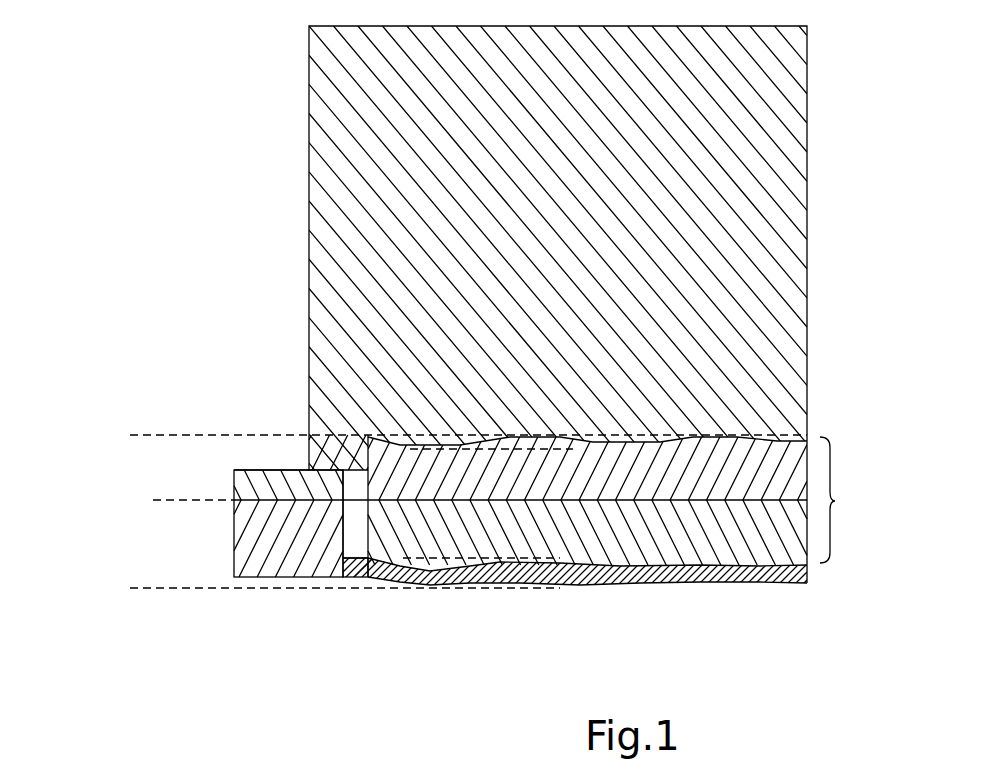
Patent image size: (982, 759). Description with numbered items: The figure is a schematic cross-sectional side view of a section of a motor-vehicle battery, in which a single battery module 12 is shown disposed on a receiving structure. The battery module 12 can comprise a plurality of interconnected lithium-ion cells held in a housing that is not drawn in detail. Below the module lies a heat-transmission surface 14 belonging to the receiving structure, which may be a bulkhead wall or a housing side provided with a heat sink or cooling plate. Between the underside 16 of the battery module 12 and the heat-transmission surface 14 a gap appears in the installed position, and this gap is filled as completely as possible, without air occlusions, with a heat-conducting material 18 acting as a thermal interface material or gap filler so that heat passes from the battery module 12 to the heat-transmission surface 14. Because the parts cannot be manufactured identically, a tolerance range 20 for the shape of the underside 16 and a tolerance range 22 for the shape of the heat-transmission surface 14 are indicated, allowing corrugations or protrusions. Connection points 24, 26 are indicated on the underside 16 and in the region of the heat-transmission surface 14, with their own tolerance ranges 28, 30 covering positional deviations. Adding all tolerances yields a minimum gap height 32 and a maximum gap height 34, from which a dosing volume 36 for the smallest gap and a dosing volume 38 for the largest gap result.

The battery module 12 is at (787, 251).
The heat-transmission surface 14 is at (578, 587).
The underside 16 is at (673, 443).
The heat-conducting material 18 is at (712, 535).
The tolerance range 20 is at (402, 480).
The tolerance range 22 is at (385, 540).
The connection point 24 is at (337, 438).
The connection point 26 is at (263, 590).
The tolerance range 28 is at (308, 447).
The tolerance range 30 is at (250, 470).
The minimum gap height 32 is at (171, 500).
The maximum gap height 34 is at (130, 435).
The dosing volume 36 is at (668, 545).
The dosing volume 38 is at (845, 500).